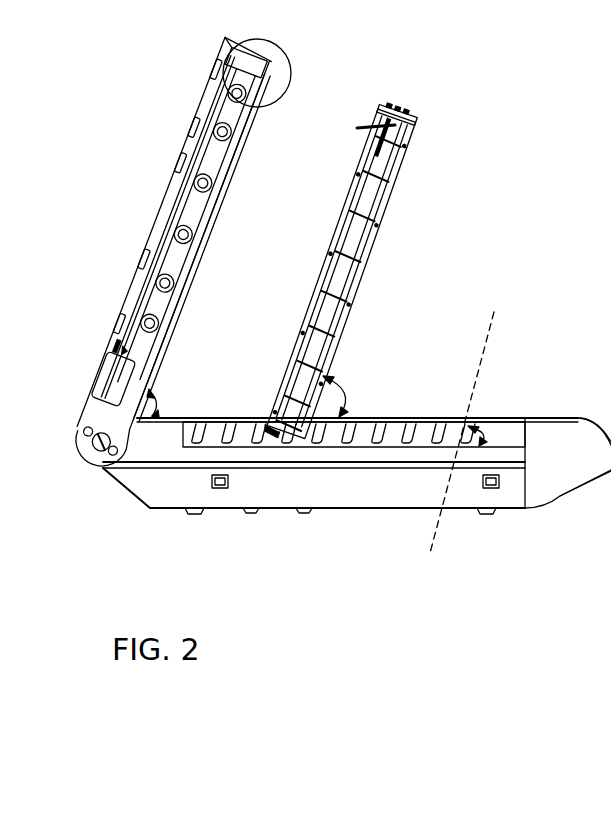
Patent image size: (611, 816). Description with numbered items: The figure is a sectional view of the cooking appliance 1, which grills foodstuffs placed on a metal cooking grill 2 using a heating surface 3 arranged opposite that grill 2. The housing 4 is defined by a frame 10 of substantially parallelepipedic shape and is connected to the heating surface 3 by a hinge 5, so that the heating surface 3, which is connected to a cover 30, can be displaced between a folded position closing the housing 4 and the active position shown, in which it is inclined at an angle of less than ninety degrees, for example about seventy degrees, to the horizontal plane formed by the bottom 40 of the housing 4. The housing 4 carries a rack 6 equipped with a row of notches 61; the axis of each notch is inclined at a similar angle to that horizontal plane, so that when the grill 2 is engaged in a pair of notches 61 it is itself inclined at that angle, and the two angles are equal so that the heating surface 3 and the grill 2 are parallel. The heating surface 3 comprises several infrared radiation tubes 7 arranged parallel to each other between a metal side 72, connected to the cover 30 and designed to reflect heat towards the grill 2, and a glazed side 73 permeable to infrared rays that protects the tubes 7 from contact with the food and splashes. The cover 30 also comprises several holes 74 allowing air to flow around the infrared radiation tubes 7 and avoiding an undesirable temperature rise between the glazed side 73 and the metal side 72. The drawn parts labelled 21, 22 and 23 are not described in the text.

The cooking appliance 1 is at (324, 296).
The cooking grill 2 is at (370, 260).
The heating surface 3 is at (202, 252).
The housing 4 is at (357, 465).
The hinge 5 is at (104, 456).
The rack 6 is at (354, 405).
The infrared radiation tube 7 is at (184, 279).
The frame 10 is at (586, 488).
The arm top end 21 is at (382, 122).
The side rail 22 is at (400, 153).
The cross rungs 23 is at (375, 220).
The cover 30 is at (225, 52).
The bottom of the housing 40 is at (357, 450).
The notch 61 is at (463, 420).
The metal side 72 is at (203, 112).
The glazed side 73 is at (207, 182).
The holes 74 is at (143, 268).